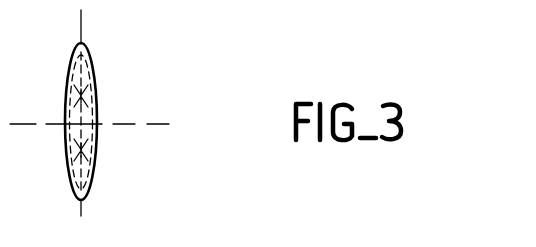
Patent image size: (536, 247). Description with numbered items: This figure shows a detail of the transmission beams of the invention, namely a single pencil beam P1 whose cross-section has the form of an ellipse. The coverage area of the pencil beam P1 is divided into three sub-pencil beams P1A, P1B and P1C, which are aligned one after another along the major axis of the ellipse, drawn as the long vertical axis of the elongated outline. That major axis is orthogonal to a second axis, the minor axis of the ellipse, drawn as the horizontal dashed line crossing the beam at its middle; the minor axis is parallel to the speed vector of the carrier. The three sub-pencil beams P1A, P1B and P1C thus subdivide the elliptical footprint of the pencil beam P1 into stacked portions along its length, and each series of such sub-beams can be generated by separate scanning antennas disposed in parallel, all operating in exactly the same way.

The pencil beam P1 is at (94, 58).
The sub-pencil beam P1A is at (96, 94).
The sub-pencil beam P1B is at (94, 143).
The sub-pencil beam P1C is at (94, 157).